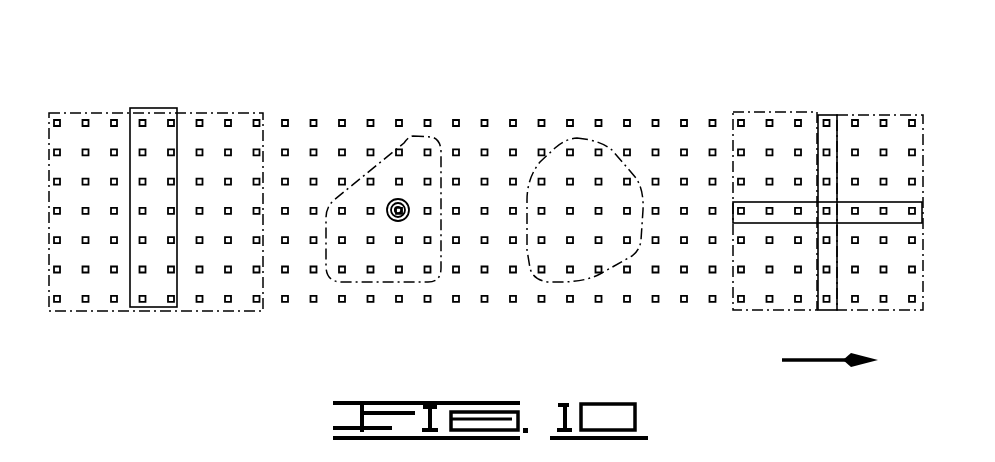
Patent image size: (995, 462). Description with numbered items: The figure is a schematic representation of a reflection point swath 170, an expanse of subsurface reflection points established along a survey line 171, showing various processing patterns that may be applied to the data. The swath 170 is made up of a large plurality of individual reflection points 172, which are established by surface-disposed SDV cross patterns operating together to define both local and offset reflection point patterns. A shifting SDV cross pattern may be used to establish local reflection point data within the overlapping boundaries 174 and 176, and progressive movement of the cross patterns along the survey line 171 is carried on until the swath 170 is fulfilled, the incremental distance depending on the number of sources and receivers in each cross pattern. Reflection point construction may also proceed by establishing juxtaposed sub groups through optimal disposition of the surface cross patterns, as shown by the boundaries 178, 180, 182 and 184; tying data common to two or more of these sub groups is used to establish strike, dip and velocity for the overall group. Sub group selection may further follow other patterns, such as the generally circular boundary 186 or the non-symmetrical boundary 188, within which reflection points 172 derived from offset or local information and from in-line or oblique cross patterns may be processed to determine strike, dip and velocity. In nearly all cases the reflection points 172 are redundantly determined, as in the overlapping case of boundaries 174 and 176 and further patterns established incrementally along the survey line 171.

The reflection point swath 170 is at (486, 183).
The survey line 171 is at (810, 362).
The reflection points 172 is at (458, 118).
The boundary 174 is at (78, 112).
The boundary 176 is at (182, 110).
The boundary 178 is at (760, 110).
The boundary 180 is at (855, 115).
The boundary 182 is at (887, 312).
The boundary 184 is at (735, 312).
The boundary 186 is at (588, 282).
The boundary 188 is at (378, 284).